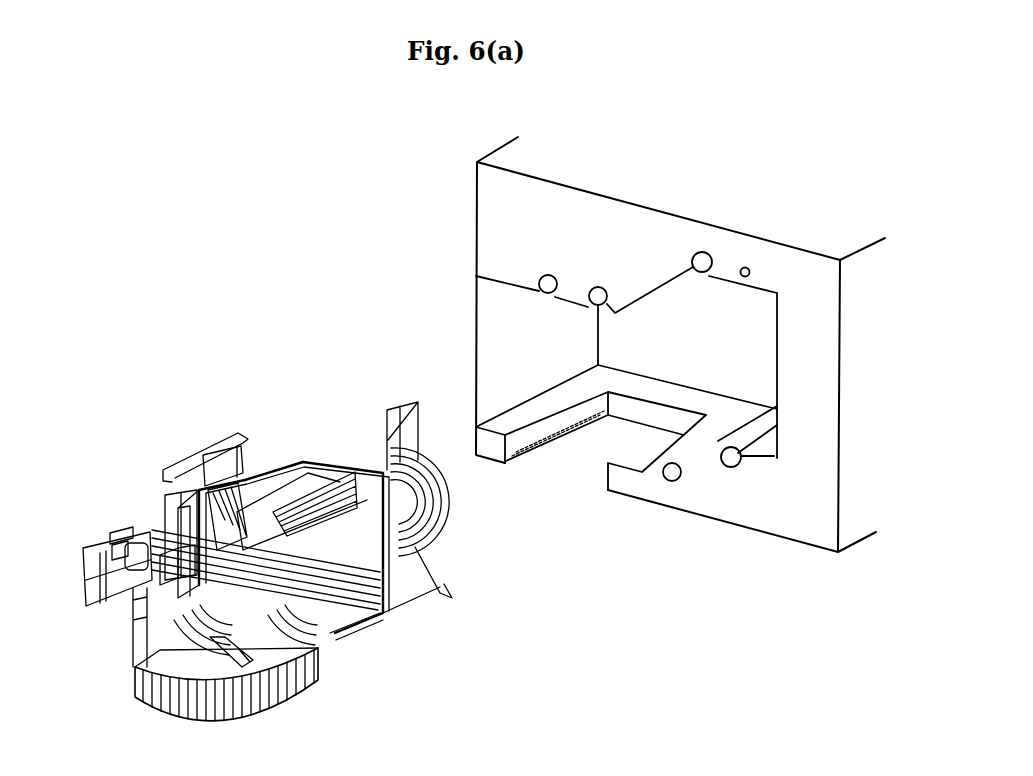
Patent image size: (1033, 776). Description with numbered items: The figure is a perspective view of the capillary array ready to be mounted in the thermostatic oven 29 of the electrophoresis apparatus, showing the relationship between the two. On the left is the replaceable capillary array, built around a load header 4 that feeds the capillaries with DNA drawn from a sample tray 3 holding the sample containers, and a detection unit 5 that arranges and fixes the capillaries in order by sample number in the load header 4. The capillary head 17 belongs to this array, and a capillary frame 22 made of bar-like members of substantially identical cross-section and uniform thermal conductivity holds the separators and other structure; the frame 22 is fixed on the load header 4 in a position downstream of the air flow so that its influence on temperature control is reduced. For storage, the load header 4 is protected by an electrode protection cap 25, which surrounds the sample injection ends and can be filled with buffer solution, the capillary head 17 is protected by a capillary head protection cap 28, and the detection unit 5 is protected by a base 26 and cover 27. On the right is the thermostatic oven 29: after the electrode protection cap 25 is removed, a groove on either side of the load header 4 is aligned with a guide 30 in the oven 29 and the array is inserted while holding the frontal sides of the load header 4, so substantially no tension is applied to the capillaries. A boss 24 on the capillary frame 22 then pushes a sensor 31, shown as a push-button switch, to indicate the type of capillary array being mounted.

The sample tray 3 is at (100, 562).
The load header 4 is at (250, 670).
The detection unit 5 is at (135, 532).
The capillary head 17 is at (172, 568).
The capillary frame 22 is at (384, 592).
The boss 24 is at (366, 463).
The electrode protection cap 25 is at (297, 683).
The base 26 is at (120, 547).
The cover 27 is at (120, 533).
The capillary head protection cap 28 is at (183, 557).
The thermostatic oven 29 is at (486, 202).
The guide 30 is at (523, 457).
The sensor 31 is at (749, 270).